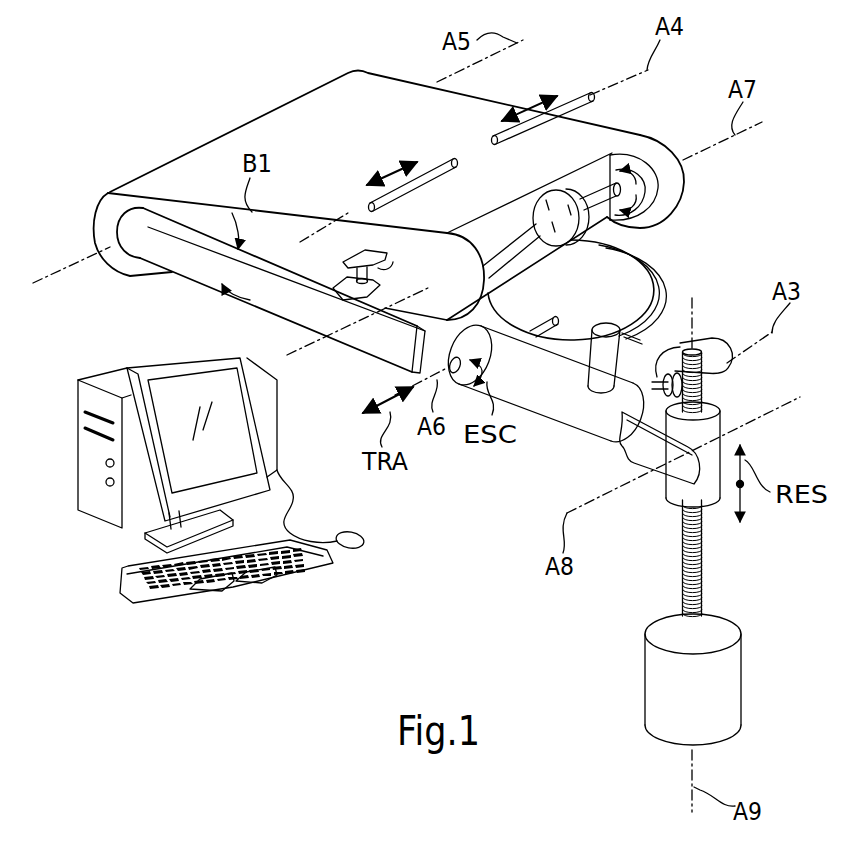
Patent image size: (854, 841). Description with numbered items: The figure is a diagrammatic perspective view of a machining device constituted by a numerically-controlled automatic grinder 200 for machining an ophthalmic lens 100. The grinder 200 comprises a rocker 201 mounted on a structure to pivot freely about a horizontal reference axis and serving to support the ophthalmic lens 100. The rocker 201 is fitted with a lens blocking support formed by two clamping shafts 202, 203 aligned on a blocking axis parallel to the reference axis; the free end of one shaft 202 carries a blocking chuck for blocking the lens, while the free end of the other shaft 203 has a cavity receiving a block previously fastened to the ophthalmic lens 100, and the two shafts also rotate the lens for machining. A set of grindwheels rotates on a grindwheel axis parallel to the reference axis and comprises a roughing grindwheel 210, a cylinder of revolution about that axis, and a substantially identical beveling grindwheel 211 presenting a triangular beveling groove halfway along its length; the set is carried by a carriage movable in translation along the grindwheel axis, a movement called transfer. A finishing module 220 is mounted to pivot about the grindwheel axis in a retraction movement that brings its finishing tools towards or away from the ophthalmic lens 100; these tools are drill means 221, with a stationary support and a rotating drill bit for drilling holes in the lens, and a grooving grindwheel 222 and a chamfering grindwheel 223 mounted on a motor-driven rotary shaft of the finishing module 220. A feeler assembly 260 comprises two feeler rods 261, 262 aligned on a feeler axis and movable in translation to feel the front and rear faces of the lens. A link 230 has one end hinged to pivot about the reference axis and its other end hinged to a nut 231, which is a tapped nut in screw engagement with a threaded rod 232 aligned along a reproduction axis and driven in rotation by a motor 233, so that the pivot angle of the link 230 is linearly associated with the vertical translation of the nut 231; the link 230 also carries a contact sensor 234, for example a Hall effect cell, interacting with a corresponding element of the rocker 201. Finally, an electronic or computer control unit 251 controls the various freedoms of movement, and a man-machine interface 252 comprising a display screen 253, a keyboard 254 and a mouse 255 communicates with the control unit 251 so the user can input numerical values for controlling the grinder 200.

The ophthalmic lens 100 is at (533, 210).
The automatic grinder 200 is at (160, 130).
The rocker 201 is at (340, 97).
The clamping shaft 202 is at (468, 232).
The clamping shaft 203 is at (617, 139).
The roughing grindwheel 210 is at (645, 292).
The beveling grindwheel 211 is at (592, 188).
The finishing module 220 is at (553, 430).
The drill means 221 is at (592, 332).
The grooving grindwheel 222 is at (655, 380).
The chamfering grindwheel 223 is at (727, 358).
The link 230 is at (125, 223).
The nut 231 is at (717, 403).
The threaded rod 232 is at (682, 568).
The motor 233 is at (652, 688).
The contact sensor 234 is at (343, 262).
The control unit 251 is at (283, 397).
The man-machine interface 252 is at (99, 553).
The display screen 253 is at (161, 366).
The keyboard 254 is at (335, 563).
The mouse 255 is at (351, 533).
The feeler assembly 260 is at (600, 78).
The feeler rod 261 is at (580, 92).
The feeler rod 262 is at (437, 160).